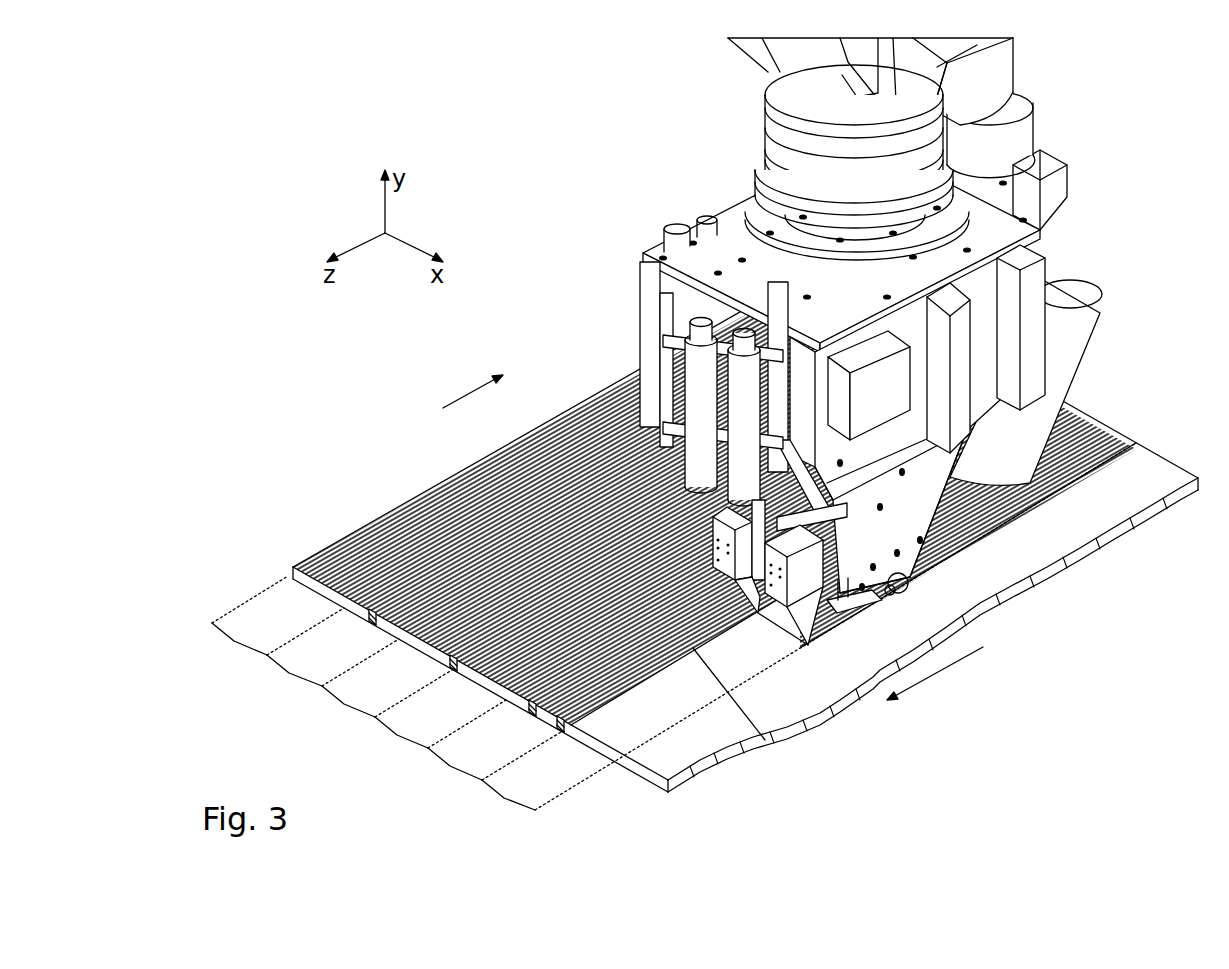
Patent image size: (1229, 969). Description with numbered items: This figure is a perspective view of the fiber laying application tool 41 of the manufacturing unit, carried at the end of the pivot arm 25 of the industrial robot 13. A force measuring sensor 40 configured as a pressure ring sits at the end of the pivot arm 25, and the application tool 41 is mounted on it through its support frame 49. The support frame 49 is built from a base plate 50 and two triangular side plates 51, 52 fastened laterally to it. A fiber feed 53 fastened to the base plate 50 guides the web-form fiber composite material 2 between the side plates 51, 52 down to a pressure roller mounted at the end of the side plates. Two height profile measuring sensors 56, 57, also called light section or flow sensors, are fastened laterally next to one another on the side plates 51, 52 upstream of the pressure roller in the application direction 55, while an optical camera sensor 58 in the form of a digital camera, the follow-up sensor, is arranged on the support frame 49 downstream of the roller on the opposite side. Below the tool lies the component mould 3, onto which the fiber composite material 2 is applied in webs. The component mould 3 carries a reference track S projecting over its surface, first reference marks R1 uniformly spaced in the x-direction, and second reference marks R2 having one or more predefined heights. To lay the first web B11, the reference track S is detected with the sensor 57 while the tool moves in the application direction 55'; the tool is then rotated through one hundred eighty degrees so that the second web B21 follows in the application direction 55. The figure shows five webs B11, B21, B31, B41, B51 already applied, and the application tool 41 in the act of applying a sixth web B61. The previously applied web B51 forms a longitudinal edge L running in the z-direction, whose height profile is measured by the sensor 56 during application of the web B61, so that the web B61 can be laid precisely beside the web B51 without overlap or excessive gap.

The fiber composite material 2 is at (440, 493).
The component mould 3 is at (1123, 503).
The industrial robot 13 is at (733, 82).
The pivot arm 25 is at (773, 148).
The force measuring sensor 40 is at (770, 203).
The application tool 41 is at (650, 230).
The support frame 49 is at (1043, 245).
The base plate 50 is at (1033, 202).
The side plate 51 is at (643, 293).
The side plate 52 is at (933, 497).
The fiber feed 53 is at (1007, 100).
The application direction 55 is at (935, 695).
The application direction 55' is at (470, 365).
The height profile measuring sensor 56 is at (773, 607).
The height profile measuring sensor 57 is at (810, 637).
The optical camera sensor 58 is at (1060, 390).
The longitudinal edge L is at (757, 603).
The reference track S is at (553, 410).
The first web B11 is at (234, 648).
The second web B21 is at (289, 680).
The third web B31 is at (342, 711).
The fourth web B41 is at (396, 743).
The fifth web B51 is at (450, 774).
The sixth web B61 is at (1043, 660).
The first reference marks R1 is at (453, 669).
The second reference marks R2 is at (370, 616).